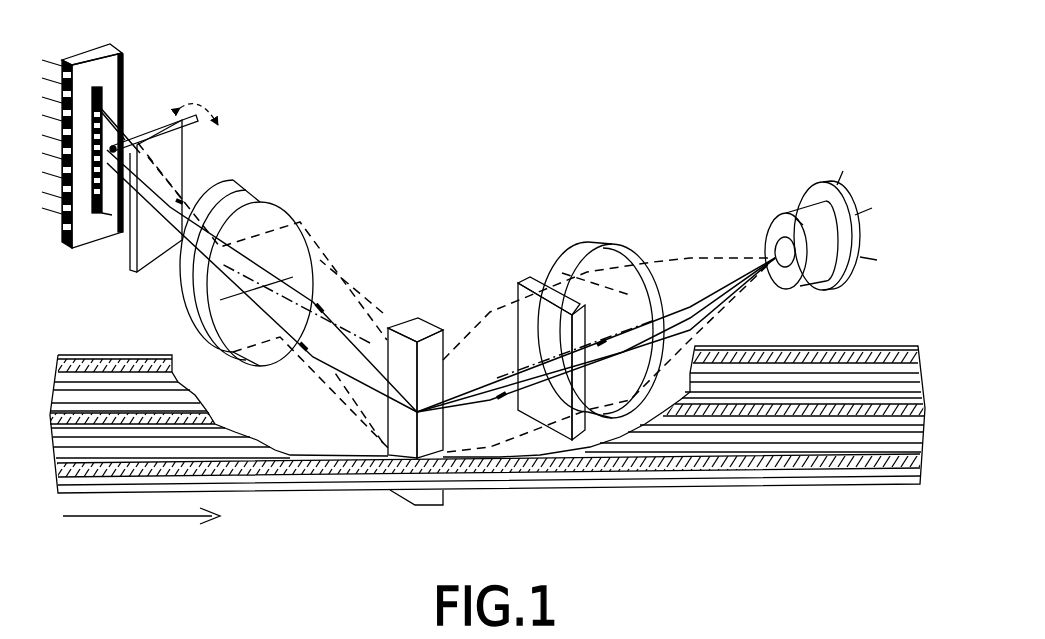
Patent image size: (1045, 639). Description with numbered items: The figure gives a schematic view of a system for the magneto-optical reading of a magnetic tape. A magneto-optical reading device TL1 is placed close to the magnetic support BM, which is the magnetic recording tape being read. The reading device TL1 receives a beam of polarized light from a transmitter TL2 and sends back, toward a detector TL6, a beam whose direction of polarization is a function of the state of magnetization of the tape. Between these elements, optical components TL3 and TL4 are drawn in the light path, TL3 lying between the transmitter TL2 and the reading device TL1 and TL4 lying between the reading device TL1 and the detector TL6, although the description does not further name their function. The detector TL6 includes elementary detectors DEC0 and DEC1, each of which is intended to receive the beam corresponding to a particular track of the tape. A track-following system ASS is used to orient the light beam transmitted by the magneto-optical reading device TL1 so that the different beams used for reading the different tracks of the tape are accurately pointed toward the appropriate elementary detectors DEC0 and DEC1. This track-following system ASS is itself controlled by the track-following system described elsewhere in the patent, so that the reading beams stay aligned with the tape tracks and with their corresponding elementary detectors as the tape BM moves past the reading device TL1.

The magnetic support BM is at (696, 483).
The magneto-optical reading device TL1 is at (432, 498).
The transmitter TL2 is at (786, 207).
The condenser lens assembly TL3 is at (613, 220).
The imaging lens TL4 is at (303, 212).
The detector TL6 is at (118, 53).
The elementary detector DEC0 is at (102, 100).
The elementary detector DEC1 is at (104, 116).
The track-following system ASS is at (170, 153).